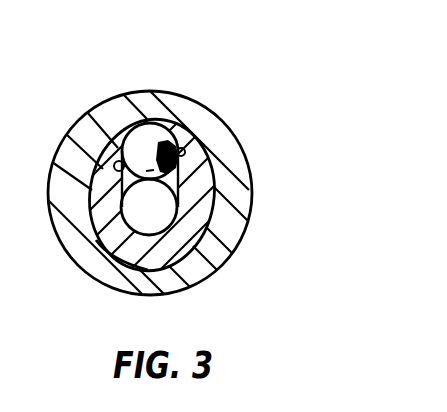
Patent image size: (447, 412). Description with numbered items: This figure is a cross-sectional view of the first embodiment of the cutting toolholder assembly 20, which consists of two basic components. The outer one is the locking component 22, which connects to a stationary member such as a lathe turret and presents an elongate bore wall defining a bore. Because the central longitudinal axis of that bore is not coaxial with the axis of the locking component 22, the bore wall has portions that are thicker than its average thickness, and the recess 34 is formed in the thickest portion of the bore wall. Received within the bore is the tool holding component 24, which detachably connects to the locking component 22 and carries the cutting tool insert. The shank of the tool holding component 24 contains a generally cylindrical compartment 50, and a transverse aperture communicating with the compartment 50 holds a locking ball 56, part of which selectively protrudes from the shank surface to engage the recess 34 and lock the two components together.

The cutting toolholder assembly 20 is at (64, 94).
The locking component 22 is at (185, 107).
The tool holding component 24 is at (132, 256).
The recess 34 is at (116, 168).
The cylindrical compartment 50 is at (96, 259).
The locking ball 56 is at (147, 126).